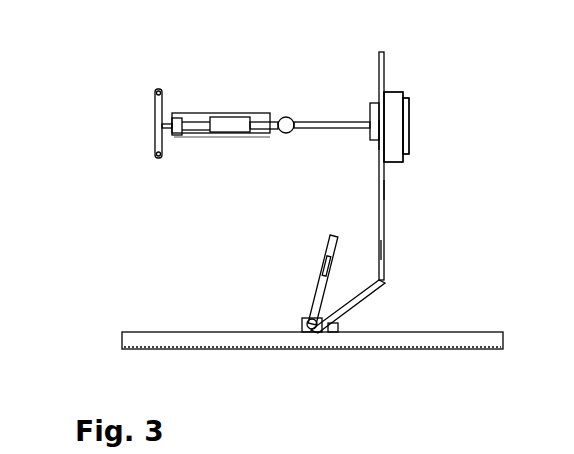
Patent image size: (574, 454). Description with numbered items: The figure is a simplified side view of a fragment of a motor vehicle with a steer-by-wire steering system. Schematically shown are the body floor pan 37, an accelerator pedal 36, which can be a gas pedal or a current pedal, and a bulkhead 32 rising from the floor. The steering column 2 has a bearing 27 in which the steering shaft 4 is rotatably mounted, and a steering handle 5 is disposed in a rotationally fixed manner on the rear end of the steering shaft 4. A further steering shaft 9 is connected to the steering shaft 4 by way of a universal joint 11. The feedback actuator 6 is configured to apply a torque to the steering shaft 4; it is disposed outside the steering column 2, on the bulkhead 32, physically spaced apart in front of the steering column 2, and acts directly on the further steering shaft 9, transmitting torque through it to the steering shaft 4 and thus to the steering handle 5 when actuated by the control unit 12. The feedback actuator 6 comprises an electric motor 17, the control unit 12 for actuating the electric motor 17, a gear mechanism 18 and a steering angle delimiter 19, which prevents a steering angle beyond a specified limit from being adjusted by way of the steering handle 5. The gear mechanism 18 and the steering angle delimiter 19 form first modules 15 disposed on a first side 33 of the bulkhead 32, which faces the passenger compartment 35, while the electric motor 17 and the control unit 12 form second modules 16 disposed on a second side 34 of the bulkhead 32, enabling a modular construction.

The steering column 2 is at (190, 115).
The steering shaft 4 is at (201, 122).
The steering handle 5 is at (157, 100).
The feedback actuator 6 is at (414, 153).
The further steering shaft 9 is at (309, 120).
The universal joint 11 is at (288, 133).
The control unit 12 is at (409, 99).
The first modules 15 is at (365, 73).
The second modules 16 is at (427, 72).
The electric motor 17 is at (393, 92).
The gear mechanism 18 is at (378, 147).
The steering angle delimiter 19 is at (372, 142).
The bearing 27 is at (178, 134).
The bulkhead 32 is at (386, 233).
The first side 33 is at (380, 250).
The second side 34 is at (386, 191).
The passenger compartment 35 is at (218, 303).
The accelerator pedal 36 is at (324, 255).
The body floor pan 37 is at (155, 332).